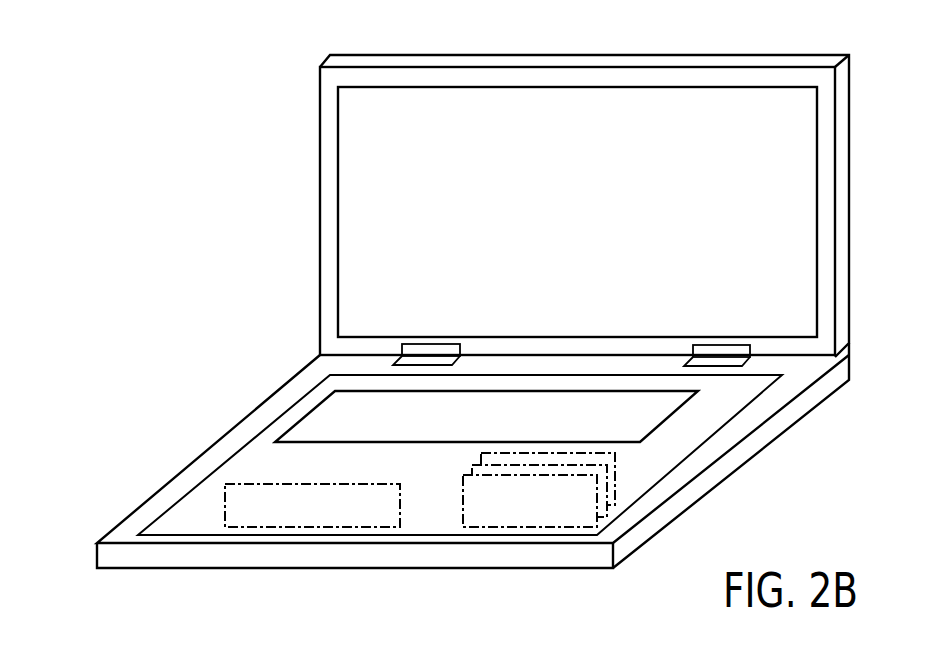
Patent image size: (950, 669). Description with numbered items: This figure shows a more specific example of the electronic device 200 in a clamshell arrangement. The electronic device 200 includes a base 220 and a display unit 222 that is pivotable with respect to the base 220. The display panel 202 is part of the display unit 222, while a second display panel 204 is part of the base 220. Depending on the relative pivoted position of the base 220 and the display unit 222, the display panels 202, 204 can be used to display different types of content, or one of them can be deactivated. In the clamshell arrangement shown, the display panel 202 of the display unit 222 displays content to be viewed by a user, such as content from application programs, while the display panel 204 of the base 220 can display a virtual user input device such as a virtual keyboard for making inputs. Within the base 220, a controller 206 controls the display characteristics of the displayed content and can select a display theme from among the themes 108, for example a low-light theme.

The electronic device 200 is at (100, 23).
The display panel 202 is at (338, 212).
The second display panel 204 is at (305, 418).
The controller 206 is at (225, 505).
The themes 108 is at (552, 527).
The base 220 is at (723, 478).
The display unit 222 is at (320, 237).